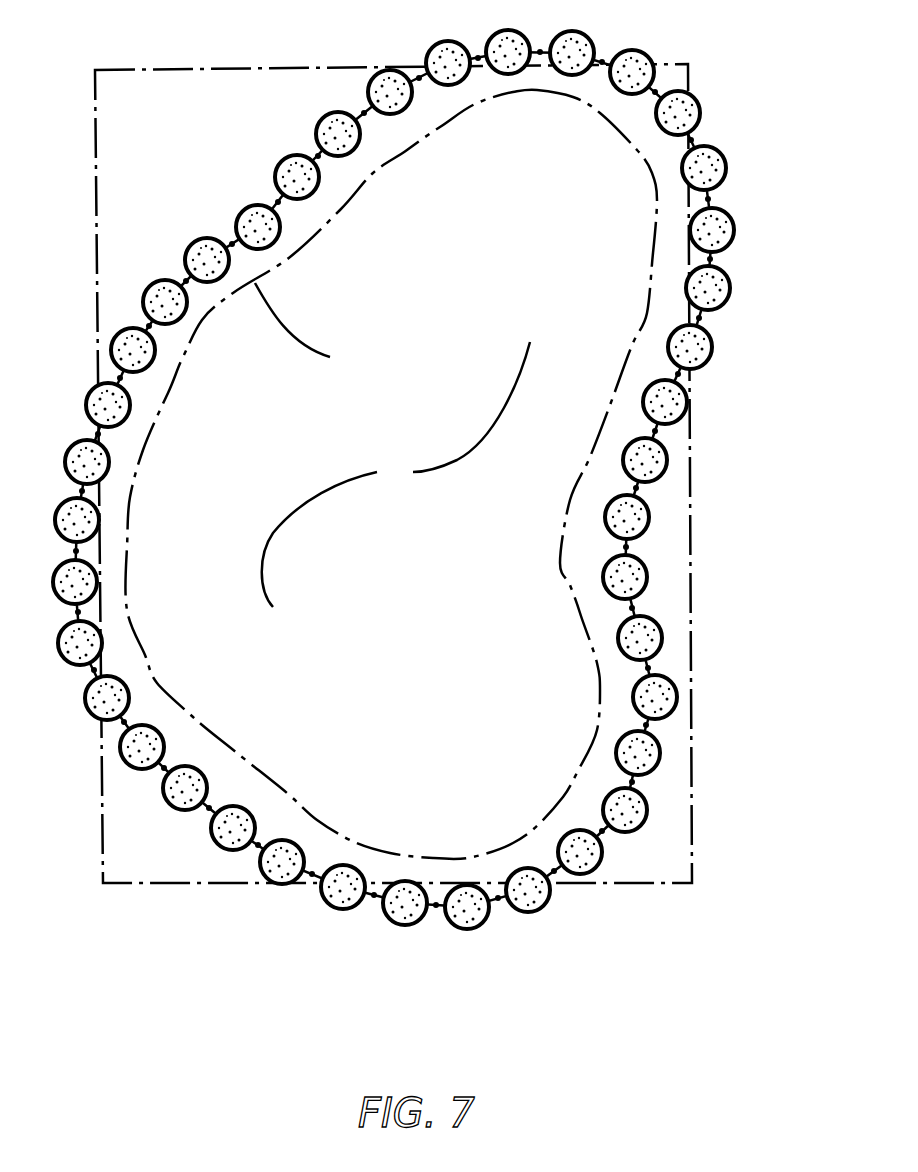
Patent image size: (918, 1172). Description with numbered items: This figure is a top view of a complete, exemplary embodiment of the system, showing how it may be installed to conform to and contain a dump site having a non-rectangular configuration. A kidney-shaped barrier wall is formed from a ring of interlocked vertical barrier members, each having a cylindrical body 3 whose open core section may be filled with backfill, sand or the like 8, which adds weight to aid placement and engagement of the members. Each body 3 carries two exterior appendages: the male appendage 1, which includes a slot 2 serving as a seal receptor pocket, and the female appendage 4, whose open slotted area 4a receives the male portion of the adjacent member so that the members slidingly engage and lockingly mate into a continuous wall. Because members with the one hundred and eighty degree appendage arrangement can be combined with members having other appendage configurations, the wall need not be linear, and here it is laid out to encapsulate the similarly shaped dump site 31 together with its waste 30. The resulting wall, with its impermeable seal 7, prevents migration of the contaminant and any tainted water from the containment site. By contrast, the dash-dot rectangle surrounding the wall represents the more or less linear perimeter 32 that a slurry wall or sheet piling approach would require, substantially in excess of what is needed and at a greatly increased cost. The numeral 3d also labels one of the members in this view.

The male appendage 1 is at (399, 489).
The slot 2 is at (399, 489).
The body 3 is at (653, 775).
The bead body surface 3d is at (280, 157).
The female appendage 4 is at (399, 489).
The slotted area 4a is at (399, 489).
The impermeable seal 7 is at (399, 489).
The backfill 8 is at (245, 212).
The waste 30 is at (396, 474).
The dump site 31 is at (308, 324).
The linear perimeter 32 is at (163, 70).